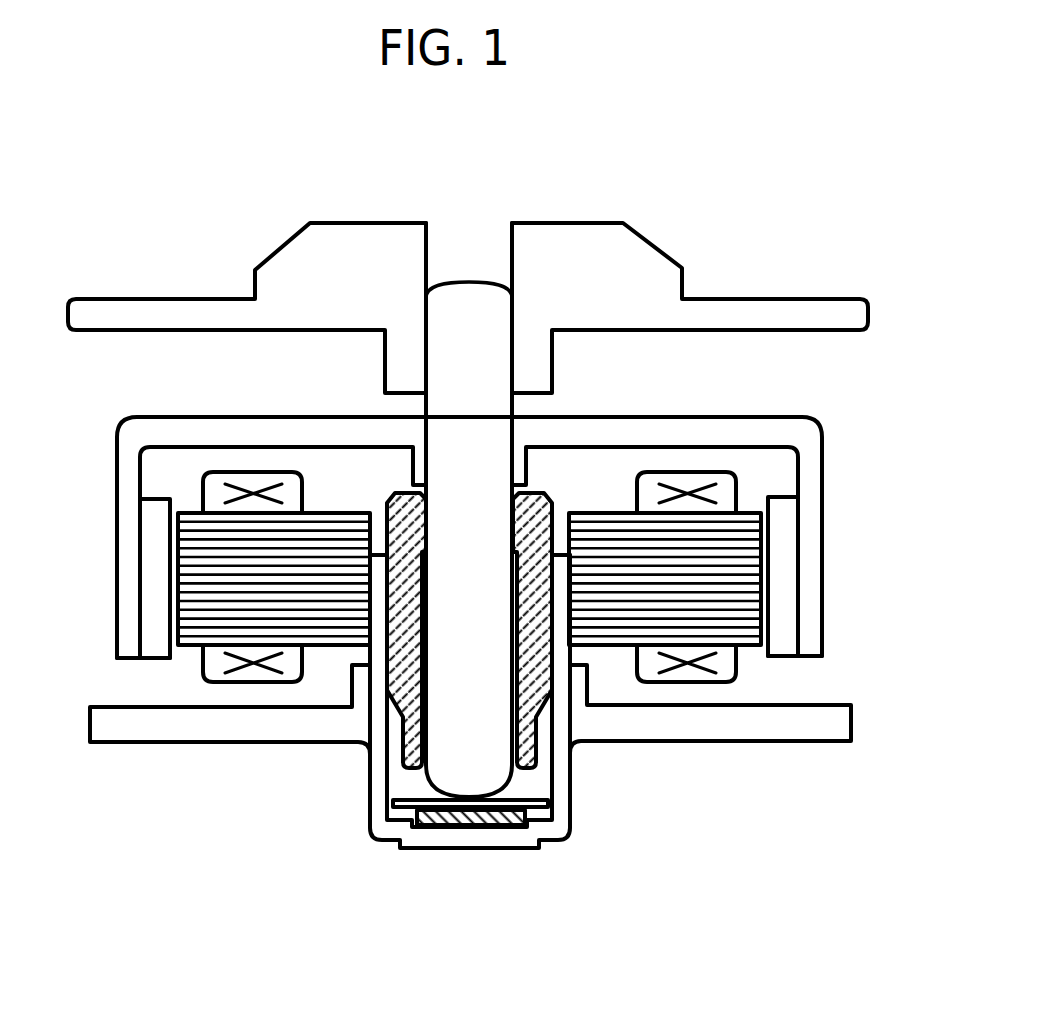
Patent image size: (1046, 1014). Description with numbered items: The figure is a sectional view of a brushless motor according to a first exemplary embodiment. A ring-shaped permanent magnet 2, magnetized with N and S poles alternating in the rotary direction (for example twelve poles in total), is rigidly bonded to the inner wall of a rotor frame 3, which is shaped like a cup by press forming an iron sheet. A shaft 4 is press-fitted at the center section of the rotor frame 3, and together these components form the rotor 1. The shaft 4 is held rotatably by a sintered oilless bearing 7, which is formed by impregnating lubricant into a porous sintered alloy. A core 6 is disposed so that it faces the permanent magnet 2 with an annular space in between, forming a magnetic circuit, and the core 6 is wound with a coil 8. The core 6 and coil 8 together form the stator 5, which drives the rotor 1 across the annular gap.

The rotor 1 is at (502, 535).
The permanent magnet 2 is at (785, 588).
The rotor frame 3 is at (808, 520).
The shaft 4 is at (458, 427).
The stator 5 is at (610, 460).
The core 6 is at (667, 612).
The sintered oilless bearing 7 is at (542, 672).
The coil 8 is at (716, 472).